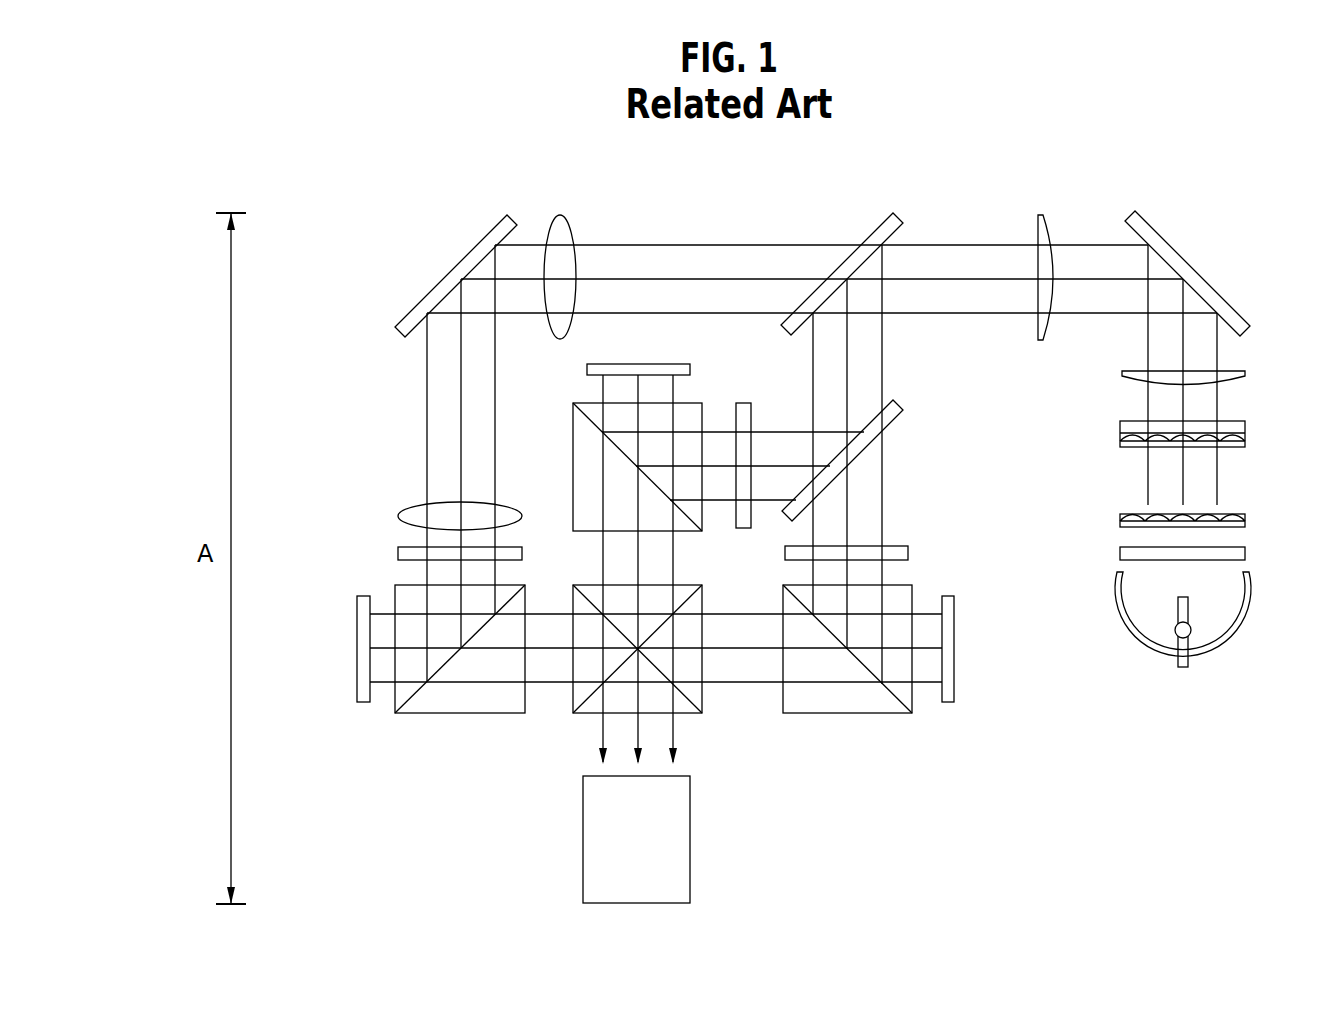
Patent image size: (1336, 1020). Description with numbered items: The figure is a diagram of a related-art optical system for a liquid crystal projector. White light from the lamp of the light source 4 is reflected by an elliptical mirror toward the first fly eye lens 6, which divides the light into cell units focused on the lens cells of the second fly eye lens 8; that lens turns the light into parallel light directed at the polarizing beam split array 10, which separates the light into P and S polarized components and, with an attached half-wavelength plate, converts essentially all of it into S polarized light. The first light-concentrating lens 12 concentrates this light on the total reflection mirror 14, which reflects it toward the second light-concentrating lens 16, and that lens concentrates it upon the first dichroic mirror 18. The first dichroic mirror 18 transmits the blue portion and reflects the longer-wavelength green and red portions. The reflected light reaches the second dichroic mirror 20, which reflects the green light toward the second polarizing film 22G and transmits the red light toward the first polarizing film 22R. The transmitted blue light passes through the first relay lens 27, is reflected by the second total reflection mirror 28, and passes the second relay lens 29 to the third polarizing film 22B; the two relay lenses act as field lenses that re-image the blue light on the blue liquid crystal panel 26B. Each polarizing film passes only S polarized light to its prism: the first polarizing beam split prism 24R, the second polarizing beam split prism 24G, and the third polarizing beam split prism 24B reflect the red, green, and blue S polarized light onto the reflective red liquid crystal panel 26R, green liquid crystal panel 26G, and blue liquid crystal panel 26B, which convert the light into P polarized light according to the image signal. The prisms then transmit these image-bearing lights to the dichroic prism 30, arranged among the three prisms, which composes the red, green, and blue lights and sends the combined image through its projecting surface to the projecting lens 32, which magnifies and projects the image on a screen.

The light source 4 is at (1153, 667).
The first fly eye lens 6 is at (1128, 518).
The second fly eye lens 8 is at (1127, 441).
The polarizing beam split array 10 is at (1240, 428).
The first light-concentrating lens 12 is at (1127, 376).
The total reflection mirror 14 is at (1177, 248).
The second light-concentrating lens 16 is at (1048, 225).
The first dichroic mirror 18 is at (876, 236).
The second dichroic mirror 20 is at (897, 413).
The third polarizing film 22B is at (405, 551).
The second polarizing film 22G is at (747, 420).
The first polarizing film 22R is at (897, 550).
The third polarizing beam split prism 24B is at (478, 708).
The second polarizing beam split prism 24G is at (692, 408).
The first polarizing beam split prism 24R is at (905, 597).
The blue liquid crystal panel 26B is at (362, 628).
The green liquid crystal panel 26G is at (590, 370).
The red liquid crystal panel 26R is at (950, 632).
The first relay lens 27 is at (565, 230).
The second total reflection mirror 28 is at (484, 242).
The second relay lens 29 is at (413, 512).
The dichroic prism 30 is at (698, 695).
The projecting lens 32 is at (685, 830).